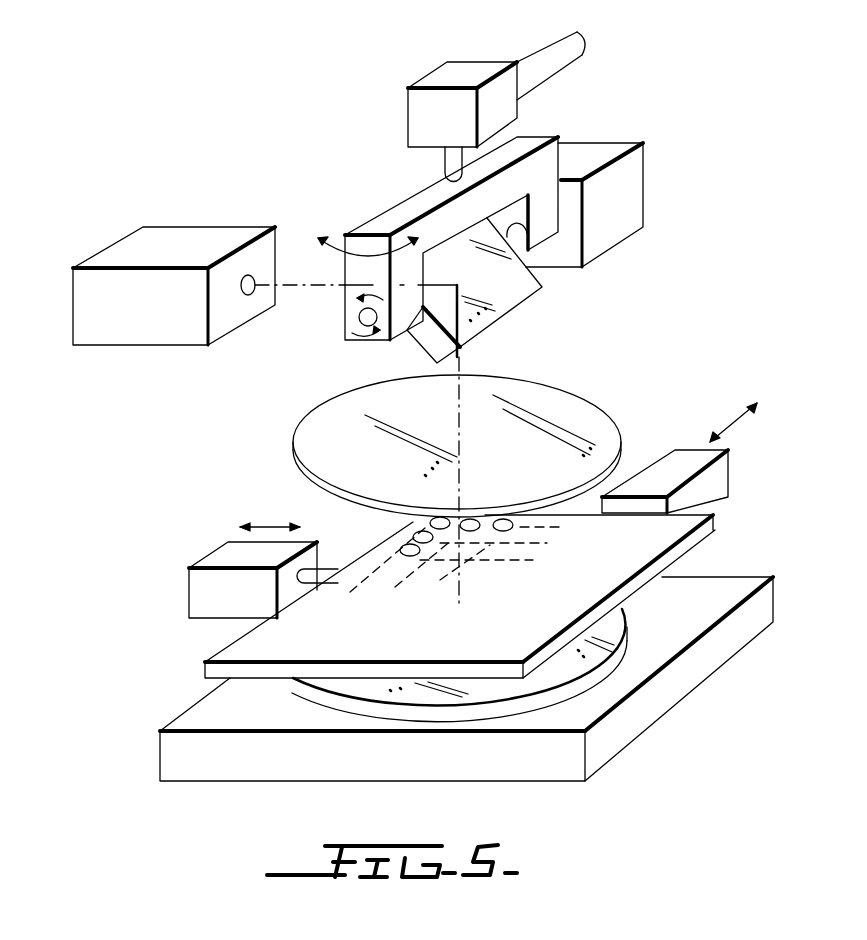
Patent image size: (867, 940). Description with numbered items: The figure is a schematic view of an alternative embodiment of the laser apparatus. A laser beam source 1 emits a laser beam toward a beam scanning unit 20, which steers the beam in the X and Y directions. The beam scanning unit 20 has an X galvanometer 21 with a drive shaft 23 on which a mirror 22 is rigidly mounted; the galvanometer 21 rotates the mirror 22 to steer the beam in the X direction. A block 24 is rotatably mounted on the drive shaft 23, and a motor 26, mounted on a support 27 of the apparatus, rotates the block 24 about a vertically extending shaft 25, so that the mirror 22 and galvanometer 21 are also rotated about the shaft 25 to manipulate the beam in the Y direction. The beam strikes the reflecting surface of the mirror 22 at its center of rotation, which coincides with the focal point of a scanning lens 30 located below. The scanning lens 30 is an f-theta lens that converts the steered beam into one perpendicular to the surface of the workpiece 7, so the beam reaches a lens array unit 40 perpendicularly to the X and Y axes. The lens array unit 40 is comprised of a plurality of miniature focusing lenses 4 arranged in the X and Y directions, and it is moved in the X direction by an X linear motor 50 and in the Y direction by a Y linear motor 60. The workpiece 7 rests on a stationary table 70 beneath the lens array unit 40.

The laser beam source 1 is at (112, 242).
The miniature focusing lenses 4 is at (398, 544).
The workpiece 7 is at (592, 702).
The beam scanning unit 20 is at (556, 115).
The X galvanometer 21 is at (607, 233).
The mirror 22 is at (487, 312).
The drive shaft 23 is at (561, 268).
The block 24 is at (395, 217).
The shaft 25 is at (445, 167).
The motor 26 is at (433, 72).
The support 27 is at (563, 40).
The scanning lens 30 is at (292, 452).
The lens array unit 40 is at (388, 606).
The X linear motor 50 is at (192, 566).
The Y linear motor 60 is at (728, 468).
The stationary table 70 is at (695, 675).